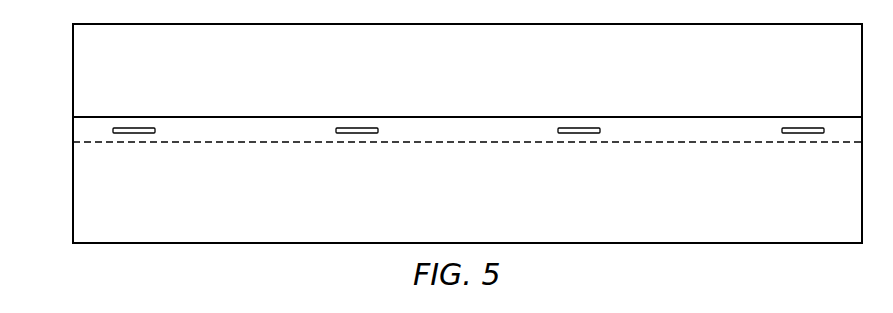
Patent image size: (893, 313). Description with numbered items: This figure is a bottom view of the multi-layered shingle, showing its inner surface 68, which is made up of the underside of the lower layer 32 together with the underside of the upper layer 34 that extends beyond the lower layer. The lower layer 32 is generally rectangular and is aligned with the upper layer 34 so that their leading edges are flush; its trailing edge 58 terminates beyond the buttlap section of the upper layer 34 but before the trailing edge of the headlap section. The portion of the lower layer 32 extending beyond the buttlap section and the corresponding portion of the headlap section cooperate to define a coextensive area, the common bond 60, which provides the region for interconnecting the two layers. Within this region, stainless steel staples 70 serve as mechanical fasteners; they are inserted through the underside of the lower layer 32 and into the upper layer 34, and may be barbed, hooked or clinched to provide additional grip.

The lower layer 32 is at (471, 191).
The upper layer 34 is at (651, 76).
The trailing edge 58 is at (229, 117).
The common bond 60 is at (68, 118).
The inner surface 68 is at (696, 232).
The staples 70 is at (134, 134).